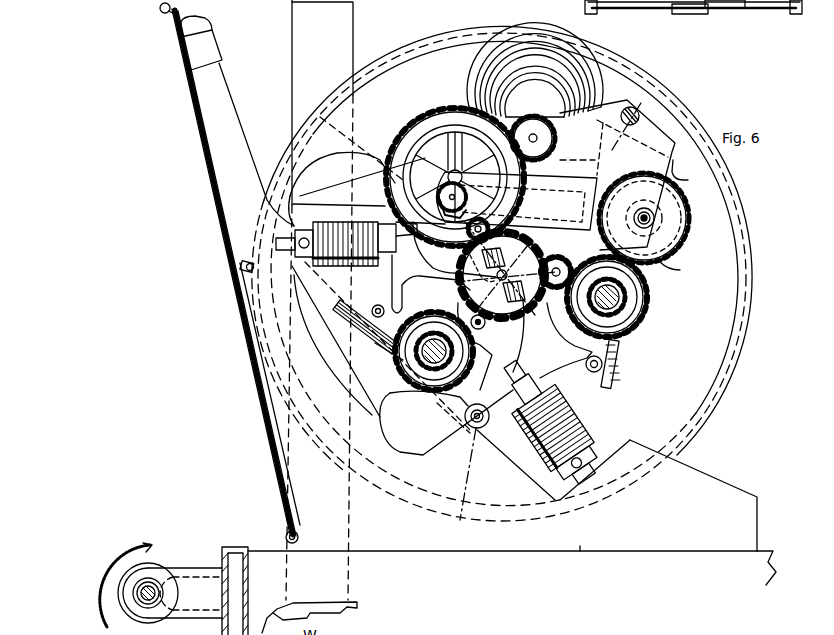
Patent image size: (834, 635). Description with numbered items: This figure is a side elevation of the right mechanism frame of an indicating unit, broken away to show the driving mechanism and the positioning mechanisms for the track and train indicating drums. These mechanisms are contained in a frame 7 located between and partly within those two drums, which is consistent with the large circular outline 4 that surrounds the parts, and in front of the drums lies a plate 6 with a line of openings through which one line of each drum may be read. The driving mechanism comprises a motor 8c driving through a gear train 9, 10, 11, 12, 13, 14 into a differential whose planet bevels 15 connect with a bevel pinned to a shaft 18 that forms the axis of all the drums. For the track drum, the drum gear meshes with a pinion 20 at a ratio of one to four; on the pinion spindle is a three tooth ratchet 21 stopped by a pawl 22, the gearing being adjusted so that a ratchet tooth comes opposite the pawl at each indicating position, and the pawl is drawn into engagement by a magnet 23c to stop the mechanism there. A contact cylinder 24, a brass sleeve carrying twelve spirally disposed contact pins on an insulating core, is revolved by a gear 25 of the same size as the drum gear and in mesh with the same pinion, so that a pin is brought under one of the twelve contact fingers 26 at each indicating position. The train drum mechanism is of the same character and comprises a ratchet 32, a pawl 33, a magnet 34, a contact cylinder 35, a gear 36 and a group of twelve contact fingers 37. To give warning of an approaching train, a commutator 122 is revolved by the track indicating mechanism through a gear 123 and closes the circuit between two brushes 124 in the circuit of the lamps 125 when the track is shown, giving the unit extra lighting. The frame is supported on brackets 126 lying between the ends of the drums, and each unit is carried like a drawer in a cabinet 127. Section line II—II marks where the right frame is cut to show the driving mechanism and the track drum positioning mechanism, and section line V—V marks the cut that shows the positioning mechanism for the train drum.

The housing ring 4 is at (722, 390).
The plate 6 is at (232, 242).
The frame 7 is at (606, 418).
The motor 8c is at (490, 98).
The gear train gear 9 is at (548, 138).
The gear train gear 10 is at (425, 133).
The gear train gear 11 is at (508, 201).
The gear train gear 12 is at (477, 270).
The gear train gear 13 is at (471, 231).
The gear train gear 14 is at (482, 290).
The planet bevels 15 is at (492, 345).
The shaft 18 is at (463, 267).
The pinion 20 is at (565, 290).
The three tooth ratchet 21 is at (592, 262).
The pawl 22 is at (566, 340).
The magnet 23c is at (586, 430).
The contact cylinder 24 is at (628, 290).
The gear 25 is at (645, 313).
The contact fingers 26 is at (626, 352).
The ratchet 32 is at (512, 340).
The pawl 33 is at (456, 288).
The magnet 34 is at (346, 253).
The contact cylinder 35 is at (476, 355).
The gear 36 is at (398, 380).
The contact fingers 37 is at (390, 350).
The commutator 122 is at (692, 232).
The gear 123 is at (684, 270).
The brushes 124 is at (680, 180).
The lamps 125 is at (167, 554).
The brackets 126 is at (236, 133).
The cabinet 127 is at (267, 550).
The section line II— II is at (645, 100).
The section line V— V is at (322, 124).